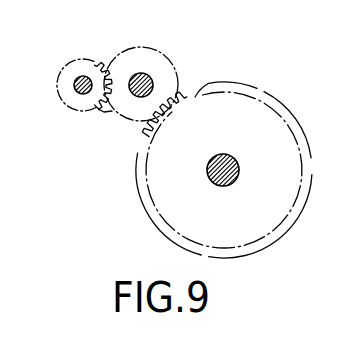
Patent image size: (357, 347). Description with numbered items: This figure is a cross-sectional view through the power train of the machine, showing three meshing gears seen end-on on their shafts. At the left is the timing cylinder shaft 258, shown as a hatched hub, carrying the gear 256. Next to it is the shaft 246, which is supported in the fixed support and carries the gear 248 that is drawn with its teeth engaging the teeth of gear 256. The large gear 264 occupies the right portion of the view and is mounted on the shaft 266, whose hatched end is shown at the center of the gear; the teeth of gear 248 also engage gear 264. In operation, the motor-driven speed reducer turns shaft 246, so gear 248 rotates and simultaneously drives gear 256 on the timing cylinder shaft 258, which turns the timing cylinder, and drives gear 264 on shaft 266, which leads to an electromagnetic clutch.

The shaft 246 is at (134, 74).
The gear 248 is at (117, 100).
The gear 256 is at (97, 68).
The timing cylinder shaft 258 is at (76, 92).
The gear 264 is at (168, 127).
The shaft 266 is at (213, 180).